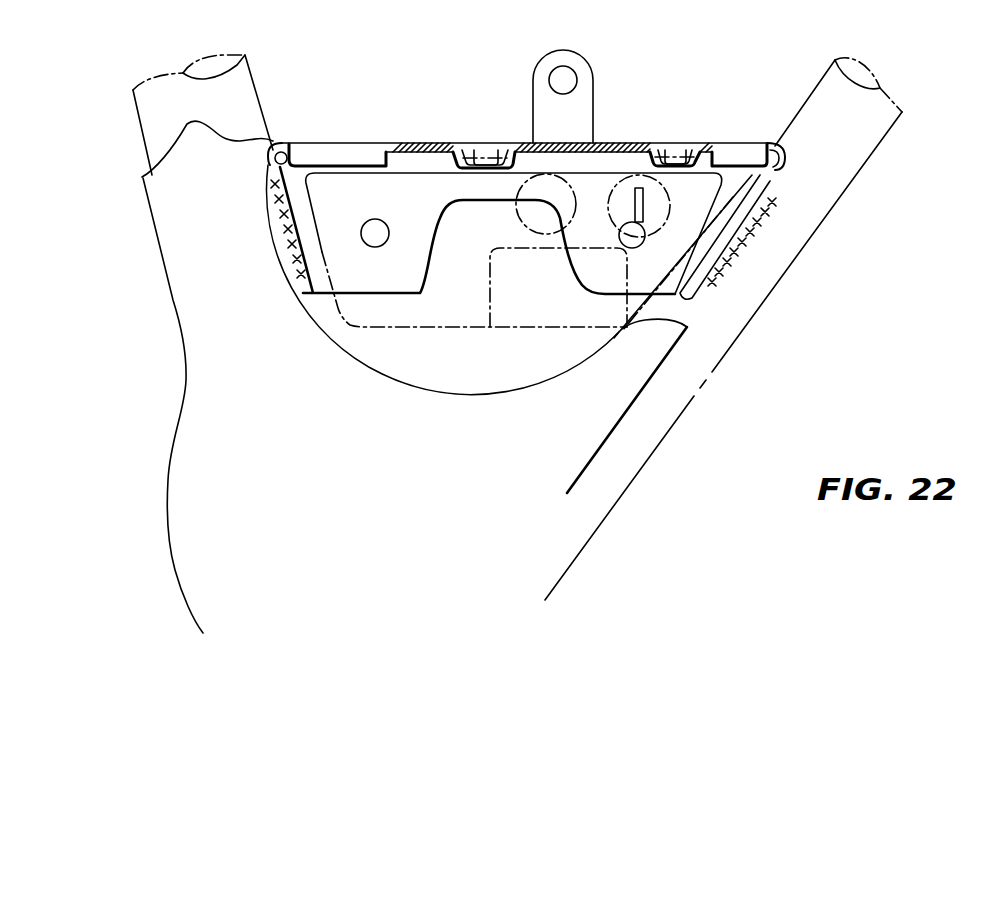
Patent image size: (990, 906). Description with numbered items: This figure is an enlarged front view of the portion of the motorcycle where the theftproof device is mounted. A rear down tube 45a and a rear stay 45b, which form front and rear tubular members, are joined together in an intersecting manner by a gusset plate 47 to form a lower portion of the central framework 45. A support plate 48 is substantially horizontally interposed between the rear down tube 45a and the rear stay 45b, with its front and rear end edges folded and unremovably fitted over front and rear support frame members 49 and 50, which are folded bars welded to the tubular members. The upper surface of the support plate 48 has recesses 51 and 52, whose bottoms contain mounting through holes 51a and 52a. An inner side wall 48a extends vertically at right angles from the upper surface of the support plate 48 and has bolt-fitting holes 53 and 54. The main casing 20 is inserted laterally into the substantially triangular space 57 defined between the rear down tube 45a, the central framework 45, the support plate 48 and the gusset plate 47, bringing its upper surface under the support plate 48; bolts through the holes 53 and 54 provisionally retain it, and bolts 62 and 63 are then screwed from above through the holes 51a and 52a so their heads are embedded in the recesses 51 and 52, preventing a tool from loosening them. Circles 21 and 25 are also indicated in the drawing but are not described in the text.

The rear stay 45b is at (253, 113).
The gusset plate 47 is at (178, 505).
The support plate 48 is at (418, 142).
The recess 52 is at (500, 143).
The mounting through hole 52a is at (483, 160).
The bolt 63 is at (470, 150).
The recess 51 is at (660, 142).
The mounting through hole 51a is at (678, 161).
The bolt 62 is at (680, 157).
The rear support frame member 50 is at (287, 200).
The front support frame member 49 is at (784, 154).
The rear down tube 45a is at (755, 280).
The central framework 45 is at (735, 345).
The inner side wall 48a is at (420, 272).
The main casing 20 is at (345, 317).
The substantially triangular space 57 is at (487, 369).
The bolt-fitting hole 54 is at (374, 219).
The circle 21 is at (518, 217).
The circle with slot 25 is at (657, 193).
The bolt-fitting hole 53 is at (617, 238).